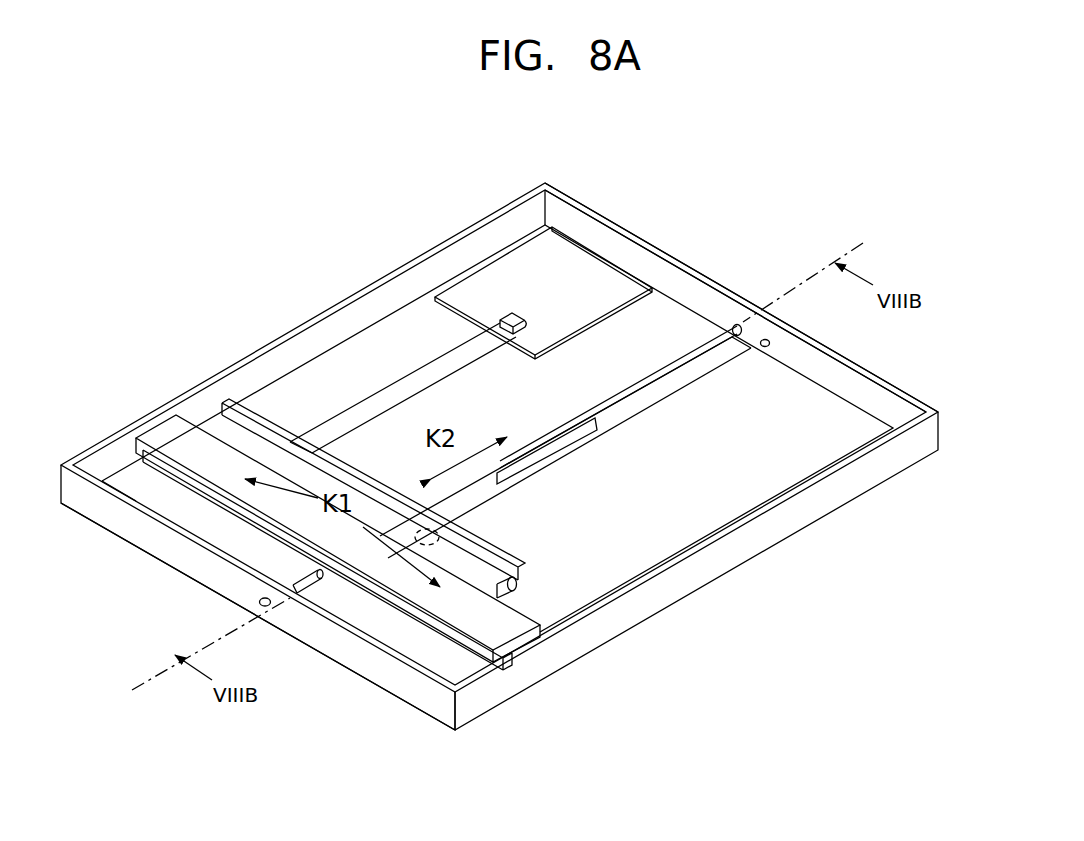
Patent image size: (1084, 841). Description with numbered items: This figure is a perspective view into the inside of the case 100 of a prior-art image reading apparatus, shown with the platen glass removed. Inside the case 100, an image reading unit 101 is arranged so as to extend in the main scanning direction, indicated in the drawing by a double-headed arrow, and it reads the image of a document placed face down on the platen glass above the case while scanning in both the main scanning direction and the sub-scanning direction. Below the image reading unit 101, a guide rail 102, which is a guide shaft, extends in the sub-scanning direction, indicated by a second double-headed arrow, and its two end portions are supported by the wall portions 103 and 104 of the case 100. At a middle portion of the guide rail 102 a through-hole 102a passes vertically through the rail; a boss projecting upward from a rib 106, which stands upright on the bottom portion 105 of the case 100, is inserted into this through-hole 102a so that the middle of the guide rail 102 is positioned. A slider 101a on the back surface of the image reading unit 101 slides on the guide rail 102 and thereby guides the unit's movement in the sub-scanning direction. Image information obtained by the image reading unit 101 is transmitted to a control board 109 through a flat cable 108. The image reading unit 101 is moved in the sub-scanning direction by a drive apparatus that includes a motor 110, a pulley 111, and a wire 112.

The case 100 is at (371, 272).
The image reading unit 101 is at (266, 539).
The slider 101a is at (332, 573).
The guide rail 102 is at (675, 352).
The through-hole 102a is at (550, 440).
The wall portion 103 is at (824, 363).
The wall portion 104 is at (388, 680).
The bottom portion 105 is at (645, 555).
The rib 106 is at (542, 462).
The flat cable 108 is at (346, 422).
The control board 109 is at (528, 262).
The motor 110 is at (520, 598).
The pulley 111 is at (445, 538).
The wire 112 is at (727, 366).